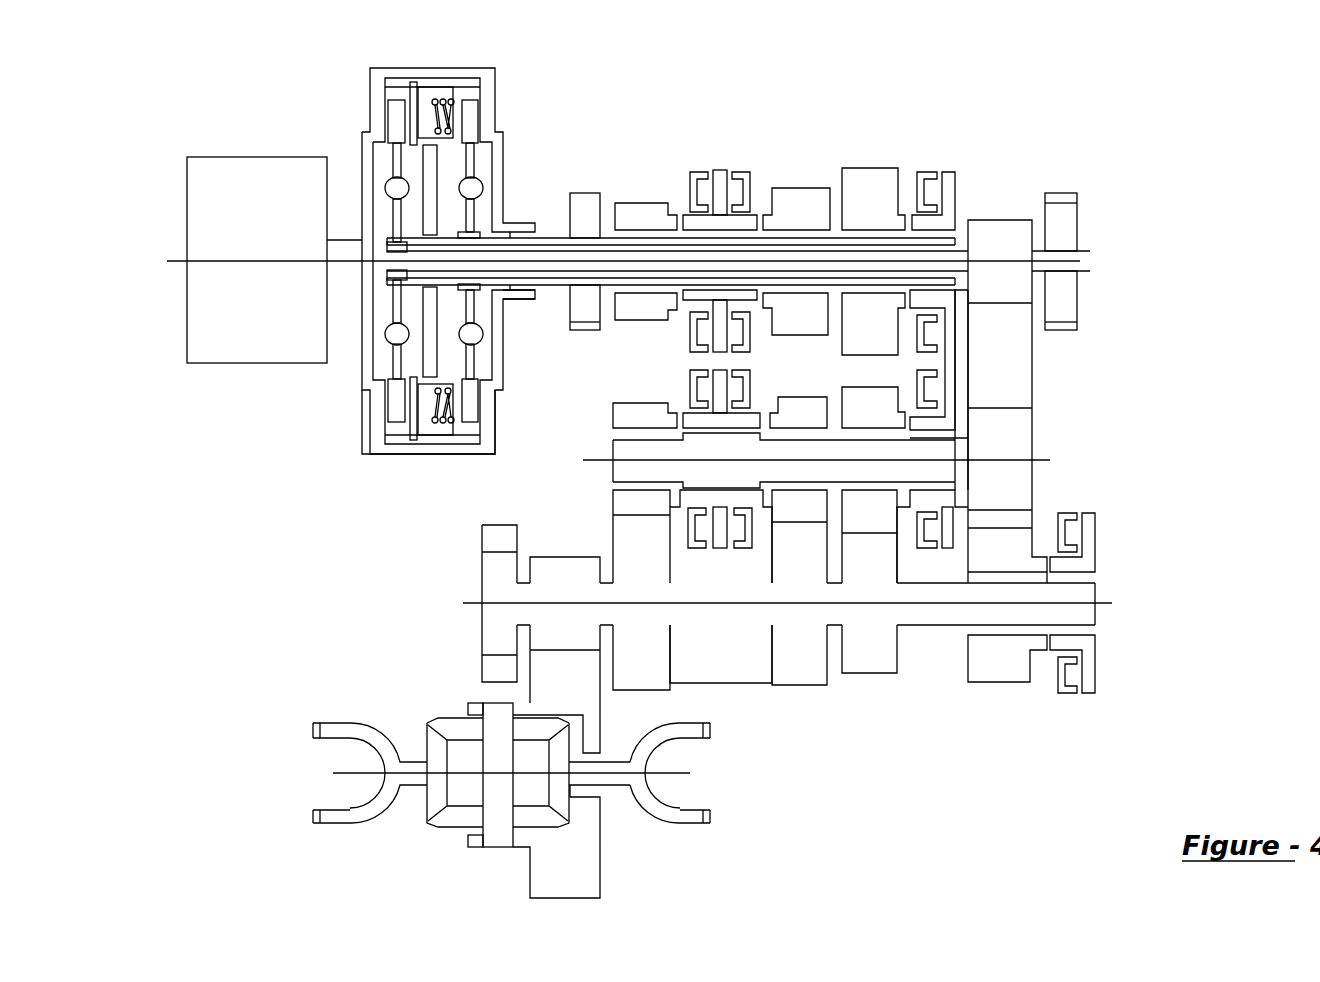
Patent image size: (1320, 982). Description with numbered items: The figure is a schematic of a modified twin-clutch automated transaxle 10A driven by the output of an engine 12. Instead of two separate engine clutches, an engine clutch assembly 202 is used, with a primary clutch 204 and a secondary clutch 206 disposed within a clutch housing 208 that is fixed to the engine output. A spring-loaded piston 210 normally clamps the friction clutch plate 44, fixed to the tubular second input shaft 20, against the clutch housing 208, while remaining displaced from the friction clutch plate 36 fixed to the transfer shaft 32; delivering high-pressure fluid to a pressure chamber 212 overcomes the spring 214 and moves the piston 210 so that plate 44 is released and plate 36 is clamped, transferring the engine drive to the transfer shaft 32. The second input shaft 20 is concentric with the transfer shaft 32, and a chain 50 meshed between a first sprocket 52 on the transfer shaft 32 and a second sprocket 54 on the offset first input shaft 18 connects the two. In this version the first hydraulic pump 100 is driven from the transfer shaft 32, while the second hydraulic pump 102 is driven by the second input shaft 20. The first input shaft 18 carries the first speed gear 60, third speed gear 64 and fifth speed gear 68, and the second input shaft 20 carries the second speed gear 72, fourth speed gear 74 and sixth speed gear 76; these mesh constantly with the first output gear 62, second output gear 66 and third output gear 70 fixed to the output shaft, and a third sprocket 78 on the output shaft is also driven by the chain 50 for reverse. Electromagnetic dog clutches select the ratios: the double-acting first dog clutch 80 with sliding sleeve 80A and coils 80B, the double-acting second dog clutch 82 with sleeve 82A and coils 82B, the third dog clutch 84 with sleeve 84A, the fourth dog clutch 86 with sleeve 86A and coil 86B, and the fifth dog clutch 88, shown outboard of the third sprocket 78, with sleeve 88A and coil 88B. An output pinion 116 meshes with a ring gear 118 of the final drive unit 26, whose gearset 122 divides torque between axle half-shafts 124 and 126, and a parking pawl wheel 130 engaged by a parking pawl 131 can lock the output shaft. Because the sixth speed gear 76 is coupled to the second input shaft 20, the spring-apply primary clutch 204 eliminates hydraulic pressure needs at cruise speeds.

The transaxle 10A is at (308, 550).
The engine 12 is at (223, 178).
The first input shaft 18 is at (598, 482).
The second input shaft 20 is at (552, 237).
The final drive unit 26 is at (480, 863).
The transfer shaft 32 is at (1072, 260).
The friction clutch plate 36 is at (395, 297).
The friction clutch plate 44 is at (476, 308).
The chain 50 is at (1018, 348).
The first sprocket 52 is at (991, 222).
The second sprocket 54 is at (1015, 432).
The first speed gear 60 is at (627, 412).
The first output gear 62 is at (648, 673).
The third speed gear 64 is at (803, 405).
The second output gear 66 is at (802, 667).
The fifth speed gear 68 is at (850, 400).
The third output gear 70 is at (880, 660).
The second speed gear 72 is at (632, 215).
The fourth speed gear 74 is at (800, 195).
The sixth speed gear 76 is at (872, 178).
The third sprocket 78 is at (993, 667).
The first dog clutch 80 is at (716, 421).
The sliding sleeve 80A is at (708, 490).
The coil 80B is at (743, 550).
The second dog clutch 82 is at (776, 137).
The sliding sleeve 82A is at (693, 300).
The coil 82B is at (700, 175).
The third dog clutch 84 is at (960, 395).
The sliding sleeve 84A is at (944, 502).
The fourth dog clutch 86 is at (942, 158).
The sliding sleeve 86A is at (958, 185).
The coil 86B is at (924, 178).
The fifth dog clutch 88 is at (1065, 706).
The sliding sleeve 88A is at (1076, 564).
The coil 88B is at (1068, 515).
The first hydraulic pump 100 is at (1073, 230).
The second hydraulic pump 102 is at (588, 213).
The output pinion 116 is at (568, 571).
The ring gear 118 is at (588, 880).
The gearset 122 is at (430, 722).
The axle half-shaft 124 is at (690, 823).
The axle half-shaft 126 is at (332, 820).
The parking pawl wheel 130 is at (498, 580).
The parking pawl 131 is at (498, 537).
The engine clutch assembly 202 is at (506, 64).
The primary clutch 204 is at (490, 170).
The secondary clutch 206 is at (382, 162).
The clutch housing 208 is at (392, 452).
The spring-loaded piston 210 is at (430, 353).
The pressure chamber 212 is at (484, 359).
The spring 214 is at (447, 104).